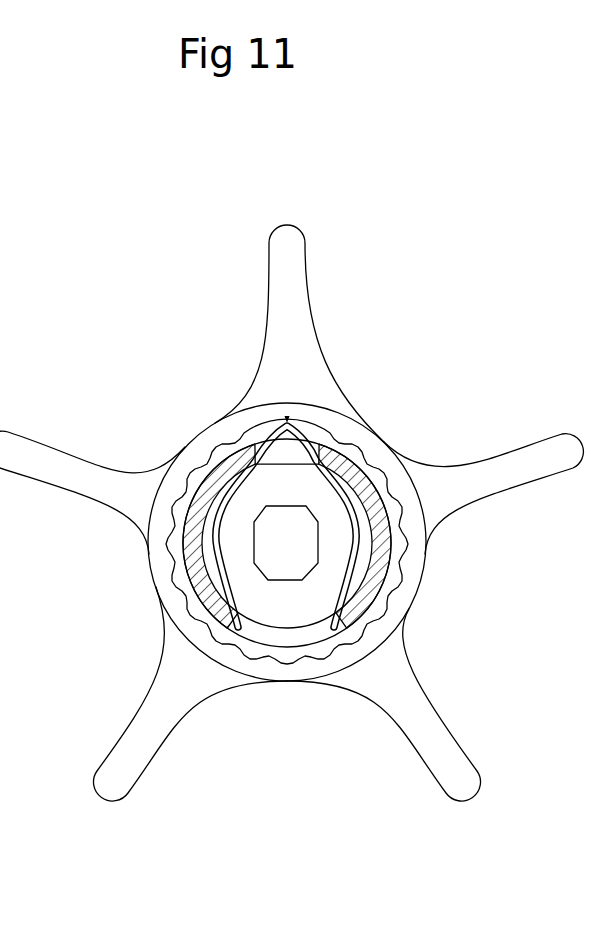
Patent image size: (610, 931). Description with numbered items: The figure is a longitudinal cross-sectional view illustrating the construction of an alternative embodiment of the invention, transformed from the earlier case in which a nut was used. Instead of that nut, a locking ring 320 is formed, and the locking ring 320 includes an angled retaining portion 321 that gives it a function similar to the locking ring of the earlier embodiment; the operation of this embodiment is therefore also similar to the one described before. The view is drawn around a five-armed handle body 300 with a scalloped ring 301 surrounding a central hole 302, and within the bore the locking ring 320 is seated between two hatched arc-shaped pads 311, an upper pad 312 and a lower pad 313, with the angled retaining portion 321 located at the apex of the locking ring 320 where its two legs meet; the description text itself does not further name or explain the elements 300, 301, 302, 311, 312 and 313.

The impeller / star wheel body 300 is at (222, 430).
The scalloped ring 301 is at (362, 448).
The central shaft hole 302 is at (287, 555).
The arc-shaped pads 311 is at (376, 514).
The upper pad 312 is at (285, 448).
The lower pad 313 is at (288, 635).
The locking ring 320 is at (352, 557).
The angled retaining portion 321 is at (287, 422).